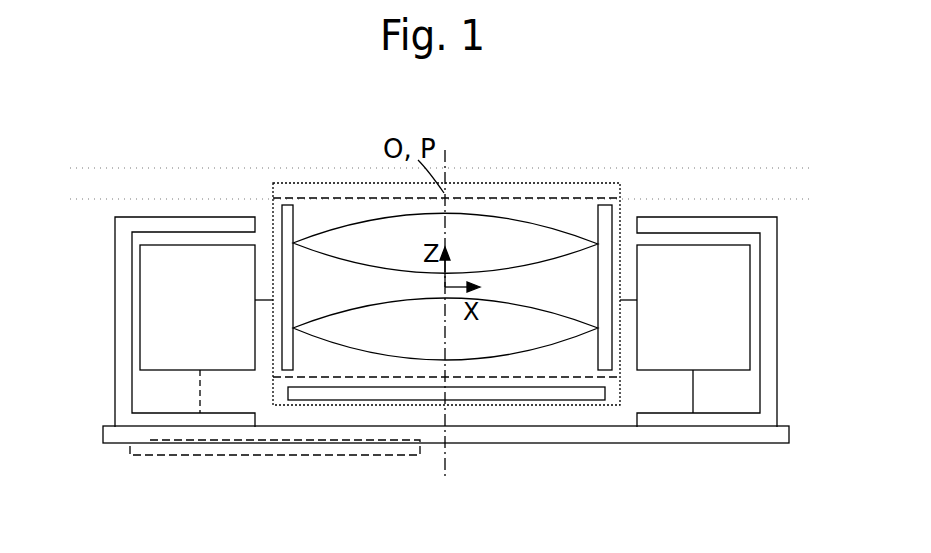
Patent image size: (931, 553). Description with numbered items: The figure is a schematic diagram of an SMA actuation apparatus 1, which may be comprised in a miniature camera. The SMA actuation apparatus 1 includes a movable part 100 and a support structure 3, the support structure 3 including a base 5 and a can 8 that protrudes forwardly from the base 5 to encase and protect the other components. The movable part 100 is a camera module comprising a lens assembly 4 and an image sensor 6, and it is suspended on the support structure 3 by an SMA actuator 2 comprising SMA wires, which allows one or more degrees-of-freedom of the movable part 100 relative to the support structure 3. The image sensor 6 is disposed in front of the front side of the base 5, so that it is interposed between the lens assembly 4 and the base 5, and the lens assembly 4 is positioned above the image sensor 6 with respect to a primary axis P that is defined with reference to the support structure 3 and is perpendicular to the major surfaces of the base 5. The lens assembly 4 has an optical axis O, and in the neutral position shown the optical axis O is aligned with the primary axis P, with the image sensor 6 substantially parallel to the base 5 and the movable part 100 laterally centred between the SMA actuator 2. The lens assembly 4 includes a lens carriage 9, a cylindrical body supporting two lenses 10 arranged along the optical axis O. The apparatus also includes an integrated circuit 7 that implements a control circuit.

The SMA actuation apparatus 1 is at (676, 141).
The SMA actuator 2 is at (163, 271).
The support structure 3 is at (153, 427).
The lens assembly 4 is at (566, 194).
The base 5 is at (597, 443).
The image sensor 6 is at (508, 401).
The integrated circuit (IC) 7 is at (335, 456).
The can 8 is at (122, 318).
The lens carriage 9 is at (285, 205).
The lens 10 is at (355, 232).
The movable part 100 is at (272, 187).